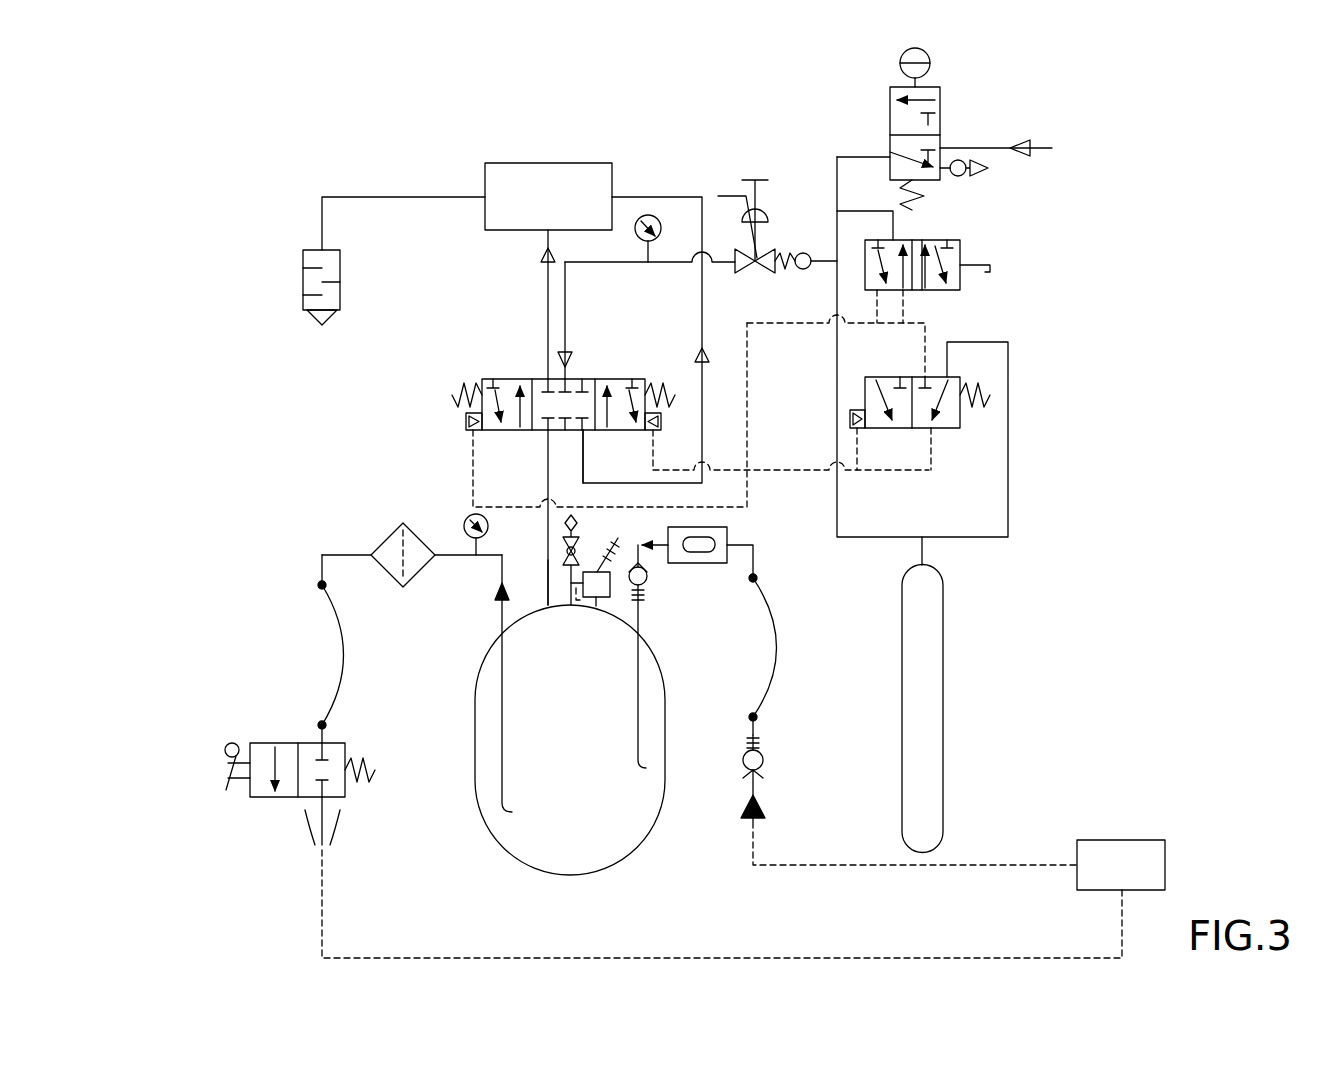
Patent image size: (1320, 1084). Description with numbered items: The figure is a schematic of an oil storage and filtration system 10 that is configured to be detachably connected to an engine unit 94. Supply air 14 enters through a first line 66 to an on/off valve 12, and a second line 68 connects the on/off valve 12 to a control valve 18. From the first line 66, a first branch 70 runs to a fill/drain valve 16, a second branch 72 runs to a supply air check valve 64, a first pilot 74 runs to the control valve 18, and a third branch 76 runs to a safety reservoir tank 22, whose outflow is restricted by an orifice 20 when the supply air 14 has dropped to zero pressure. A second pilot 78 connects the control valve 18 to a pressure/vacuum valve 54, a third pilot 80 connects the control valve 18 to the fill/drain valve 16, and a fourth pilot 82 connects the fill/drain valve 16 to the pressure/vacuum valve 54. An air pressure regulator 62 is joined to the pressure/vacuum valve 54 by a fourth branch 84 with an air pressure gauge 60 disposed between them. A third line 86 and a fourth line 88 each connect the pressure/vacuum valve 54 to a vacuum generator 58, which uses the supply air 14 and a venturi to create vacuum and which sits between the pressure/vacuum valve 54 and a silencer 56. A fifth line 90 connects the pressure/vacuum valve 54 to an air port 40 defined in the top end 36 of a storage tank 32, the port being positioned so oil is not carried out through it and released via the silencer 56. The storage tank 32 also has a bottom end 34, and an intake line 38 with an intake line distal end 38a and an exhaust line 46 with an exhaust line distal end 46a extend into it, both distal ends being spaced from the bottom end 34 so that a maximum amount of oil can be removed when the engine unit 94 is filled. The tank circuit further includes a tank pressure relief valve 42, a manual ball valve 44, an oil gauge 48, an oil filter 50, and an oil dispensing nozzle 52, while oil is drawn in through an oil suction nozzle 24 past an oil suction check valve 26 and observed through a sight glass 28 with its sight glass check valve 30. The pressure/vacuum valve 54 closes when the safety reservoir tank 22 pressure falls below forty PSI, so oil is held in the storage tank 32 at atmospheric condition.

The oil storage and filtration system 10 is at (1234, 124).
The on/off valve 12 is at (938, 88).
The supply air 14 is at (1067, 132).
The fill/drain valve 16 is at (940, 240).
The control valve 18 is at (962, 418).
The orifice 20 is at (860, 552).
The safety reservoir tank 22 is at (945, 765).
The oil suction nozzle 24 is at (768, 822).
The oil suction check valve 26 is at (784, 748).
The sight glass 28 is at (700, 563).
The sight glass check valve 30 is at (658, 587).
The storage tank 32 is at (552, 878).
The bottom end 34 is at (480, 859).
The top end 36 is at (539, 606).
The intake line 38 is at (652, 703).
The intake line distal end 38a is at (652, 762).
The air port 40 is at (558, 616).
The tank pressure relief valve 42 is at (614, 544).
The manual ball valve 44 is at (560, 539).
The exhaust line 46 is at (473, 750).
The exhaust line distal end 46a is at (500, 805).
The oil gauge 48 is at (466, 520).
The oil filter 50 is at (380, 538).
The oil dispensing nozzle 52 is at (210, 778).
The pressure/vacuum valve 54 is at (498, 378).
The silencer 56 is at (303, 292).
The vacuum generator 58 is at (550, 162).
The air pressure gauge 60 is at (652, 215).
The air pressure regulator 62 is at (776, 181).
The supply air check valve 64 is at (798, 240).
The first line 66 is at (967, 150).
The second line 68 is at (855, 155).
The first branch 70 is at (880, 211).
The second branch 72 is at (825, 265).
The first pilot 74 is at (857, 448).
The third branch 76 is at (930, 555).
The second pilot 78 is at (931, 478).
The third pilot 80 is at (916, 328).
The fourth pilot 82 is at (870, 328).
The fourth branch 84 is at (672, 260).
The third line 86 is at (585, 450).
The fourth line 88 is at (546, 310).
The fifth line 90 is at (546, 460).
The engine unit 94 is at (1122, 840).